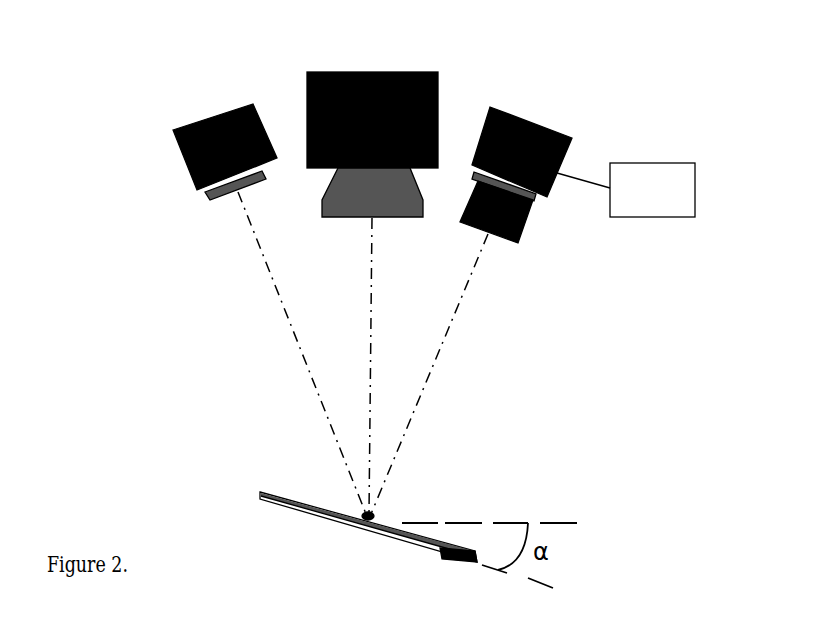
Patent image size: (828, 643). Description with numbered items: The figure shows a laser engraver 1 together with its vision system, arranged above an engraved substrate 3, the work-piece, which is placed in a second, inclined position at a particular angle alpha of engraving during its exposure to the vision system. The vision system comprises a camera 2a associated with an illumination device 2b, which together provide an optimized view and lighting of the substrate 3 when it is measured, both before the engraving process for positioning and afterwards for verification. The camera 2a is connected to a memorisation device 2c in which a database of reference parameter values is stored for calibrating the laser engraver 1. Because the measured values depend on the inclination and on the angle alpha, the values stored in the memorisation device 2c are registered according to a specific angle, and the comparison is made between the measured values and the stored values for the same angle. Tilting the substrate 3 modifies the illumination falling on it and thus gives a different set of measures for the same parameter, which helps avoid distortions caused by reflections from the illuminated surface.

The laser engraver 1 is at (391, 126).
The camera 2a is at (528, 152).
The illumination device 2b is at (196, 139).
The memorisation device 2c is at (641, 216).
The substrate 3 is at (343, 528).